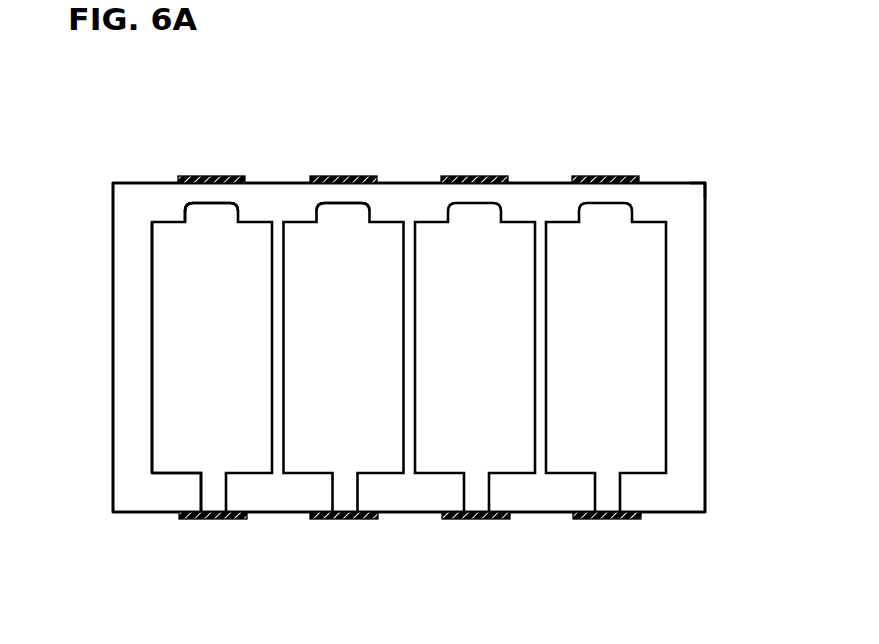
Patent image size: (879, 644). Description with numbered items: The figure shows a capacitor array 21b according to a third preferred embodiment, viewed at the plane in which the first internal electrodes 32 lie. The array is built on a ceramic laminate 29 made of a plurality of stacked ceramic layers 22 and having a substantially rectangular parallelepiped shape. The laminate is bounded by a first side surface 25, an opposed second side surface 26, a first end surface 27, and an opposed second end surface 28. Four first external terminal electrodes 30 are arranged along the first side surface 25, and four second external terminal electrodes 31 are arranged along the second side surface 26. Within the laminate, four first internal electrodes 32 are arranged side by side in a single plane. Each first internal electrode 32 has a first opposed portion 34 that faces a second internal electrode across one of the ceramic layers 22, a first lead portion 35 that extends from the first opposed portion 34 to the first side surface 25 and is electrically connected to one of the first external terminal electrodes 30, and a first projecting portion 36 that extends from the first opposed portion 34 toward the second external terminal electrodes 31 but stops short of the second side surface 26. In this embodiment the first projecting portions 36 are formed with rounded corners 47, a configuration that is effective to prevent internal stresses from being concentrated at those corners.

The capacitor array 21b is at (119, 86).
The ceramic layers 22 is at (690, 227).
The first side surface 25 is at (408, 514).
The second side surface 26 is at (532, 181).
The first end surface 27 is at (113, 283).
The second end surface 28 is at (706, 319).
The ceramic laminate 29 is at (707, 181).
The first external terminal electrodes 30 is at (332, 519).
The second external terminal electrodes 31 is at (478, 175).
The first internal electrodes 32 is at (150, 332).
The first opposed portions 34 is at (160, 395).
The first lead portions 35 is at (202, 493).
The first projecting portions 36 is at (196, 207).
The rounded corners 47 is at (317, 204).